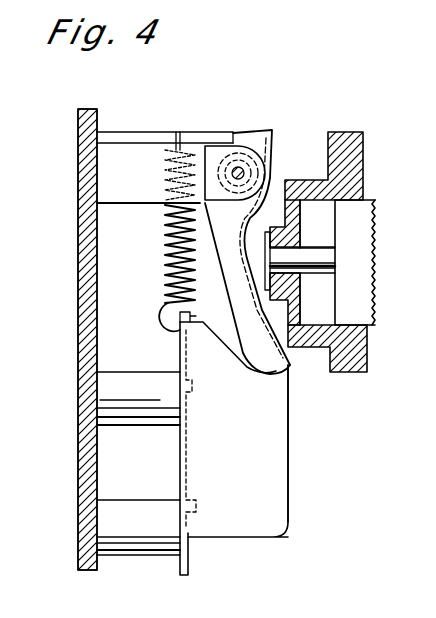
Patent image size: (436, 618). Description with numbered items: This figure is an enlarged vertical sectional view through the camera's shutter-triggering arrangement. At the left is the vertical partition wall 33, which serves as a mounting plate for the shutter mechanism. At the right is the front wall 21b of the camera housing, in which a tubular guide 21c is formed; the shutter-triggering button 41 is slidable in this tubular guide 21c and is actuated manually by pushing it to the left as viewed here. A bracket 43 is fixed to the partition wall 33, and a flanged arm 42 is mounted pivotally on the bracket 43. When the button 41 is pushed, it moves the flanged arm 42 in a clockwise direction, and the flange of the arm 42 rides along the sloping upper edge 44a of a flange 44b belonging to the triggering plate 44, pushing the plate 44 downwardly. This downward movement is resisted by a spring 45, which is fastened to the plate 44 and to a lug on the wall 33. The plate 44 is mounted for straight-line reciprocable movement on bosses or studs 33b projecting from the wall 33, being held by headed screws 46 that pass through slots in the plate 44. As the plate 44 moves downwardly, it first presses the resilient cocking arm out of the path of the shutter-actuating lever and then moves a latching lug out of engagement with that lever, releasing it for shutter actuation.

The vertical partition wall 33 is at (78, 337).
The bosses or studs 33b is at (136, 407).
The shutter-triggering button 41 is at (353, 266).
The flanged arm 42 is at (283, 370).
The bracket 43 is at (137, 158).
The triggering plate 44 is at (248, 517).
The sloping upper edge 44a is at (196, 318).
The flange 44b is at (290, 476).
The spring 45 is at (163, 273).
The headed screws 46 is at (197, 500).
The front wall 21b is at (357, 372).
The tubular guide 21c is at (312, 205).